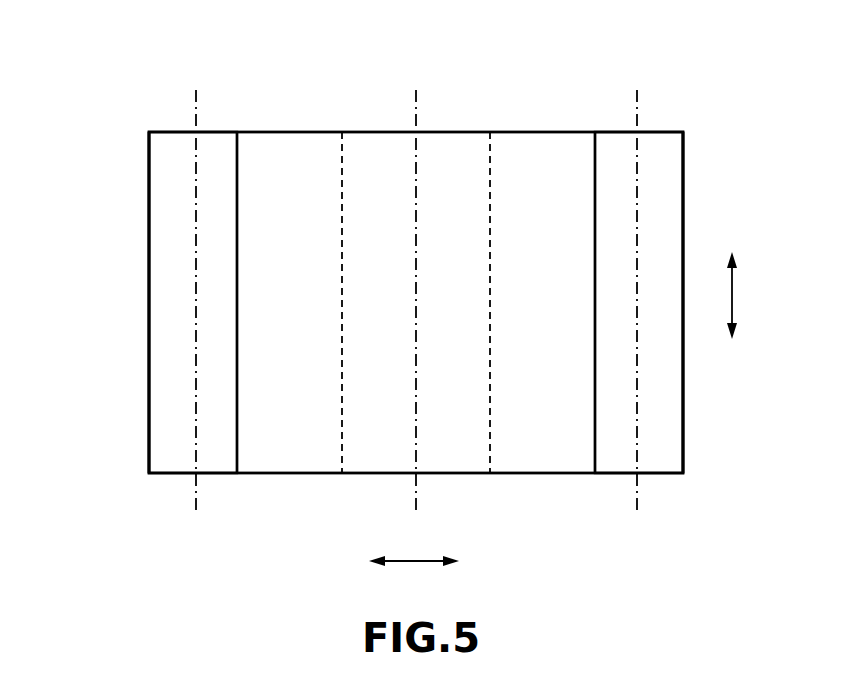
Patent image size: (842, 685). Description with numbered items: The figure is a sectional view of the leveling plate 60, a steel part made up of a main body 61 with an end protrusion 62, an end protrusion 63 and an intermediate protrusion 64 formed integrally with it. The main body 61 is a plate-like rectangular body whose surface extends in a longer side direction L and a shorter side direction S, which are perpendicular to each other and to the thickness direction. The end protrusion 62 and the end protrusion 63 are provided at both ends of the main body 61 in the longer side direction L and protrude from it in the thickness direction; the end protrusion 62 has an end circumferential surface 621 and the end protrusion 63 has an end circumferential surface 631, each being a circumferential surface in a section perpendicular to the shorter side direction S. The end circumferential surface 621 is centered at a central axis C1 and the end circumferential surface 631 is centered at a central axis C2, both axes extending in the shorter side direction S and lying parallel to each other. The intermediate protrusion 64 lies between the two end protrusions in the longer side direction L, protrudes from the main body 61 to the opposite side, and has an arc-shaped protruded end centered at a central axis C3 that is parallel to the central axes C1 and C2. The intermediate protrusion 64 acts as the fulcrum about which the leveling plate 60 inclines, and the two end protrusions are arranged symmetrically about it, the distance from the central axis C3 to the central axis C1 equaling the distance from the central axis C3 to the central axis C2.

The leveling plate 60 is at (145, 278).
The main body 61 is at (291, 143).
The end protrusion 62 is at (171, 132).
The end circumferential surface 621 is at (165, 172).
The end protrusion 63 is at (658, 132).
The end circumferential surface 631 is at (665, 200).
The intermediate protrusion 64 is at (373, 473).
The central axis C1 is at (196, 495).
The central axis C2 is at (637, 495).
The central axis C3 is at (416, 498).
The shorter side direction S is at (744, 295).
The longer side direction L is at (414, 576).